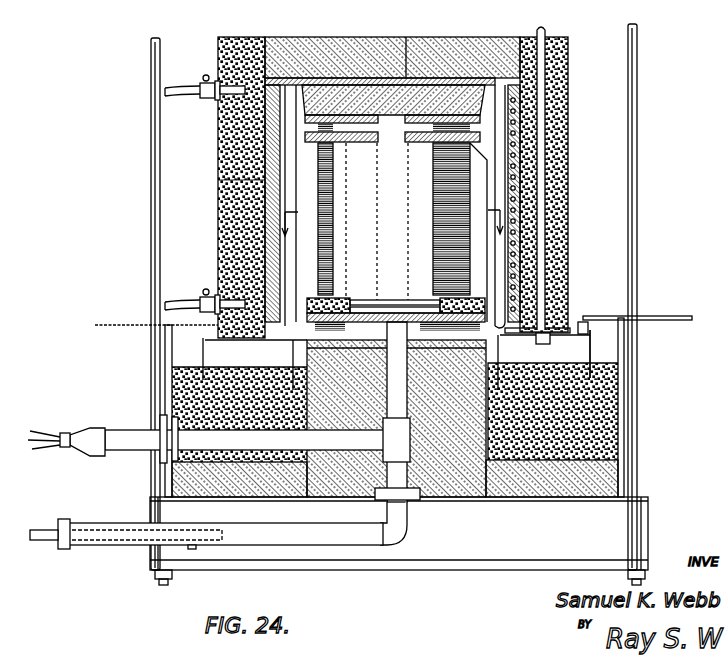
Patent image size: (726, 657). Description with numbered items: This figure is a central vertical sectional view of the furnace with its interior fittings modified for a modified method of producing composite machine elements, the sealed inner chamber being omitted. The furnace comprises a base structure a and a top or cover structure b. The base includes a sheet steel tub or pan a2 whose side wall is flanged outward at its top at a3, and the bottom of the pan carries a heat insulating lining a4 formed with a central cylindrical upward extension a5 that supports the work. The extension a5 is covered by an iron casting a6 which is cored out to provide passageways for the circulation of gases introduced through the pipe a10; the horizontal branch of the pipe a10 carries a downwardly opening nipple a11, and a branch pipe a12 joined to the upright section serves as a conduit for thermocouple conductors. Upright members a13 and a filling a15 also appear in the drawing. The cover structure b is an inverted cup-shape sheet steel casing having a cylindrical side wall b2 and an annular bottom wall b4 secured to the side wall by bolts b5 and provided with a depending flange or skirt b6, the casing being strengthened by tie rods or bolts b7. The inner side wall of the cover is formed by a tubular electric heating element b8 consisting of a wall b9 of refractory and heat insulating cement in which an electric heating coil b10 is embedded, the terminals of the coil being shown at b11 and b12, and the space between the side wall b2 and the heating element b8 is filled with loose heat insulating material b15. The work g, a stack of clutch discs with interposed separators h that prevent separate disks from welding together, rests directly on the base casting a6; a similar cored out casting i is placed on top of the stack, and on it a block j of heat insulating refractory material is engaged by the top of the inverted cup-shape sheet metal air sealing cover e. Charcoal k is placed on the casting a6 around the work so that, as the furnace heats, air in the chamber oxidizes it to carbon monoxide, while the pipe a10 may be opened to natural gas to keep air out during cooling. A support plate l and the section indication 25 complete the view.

The base structure a is at (655, 420).
The sheet steel tub or pan a2 is at (625, 392).
The outward flange a3 is at (688, 316).
The heat insulating lining a4 is at (565, 497).
The central cylindrical upward extension a5 is at (470, 490).
The iron casting a6 is at (305, 347).
The pipe a10 is at (440, 497).
The downwardly opening nipple a11 is at (193, 549).
The branch pipe a12 is at (127, 437).
The post a13 is at (151, 165).
The insulating filling a15 is at (624, 440).
The top or cover structure b is at (338, 75).
The cylindrical side wall b2 is at (568, 118).
The annular bottom wall b4 is at (575, 322).
The bolts b5 is at (588, 322).
The depending flange or skirt b6 is at (592, 348).
The tie rods or bolts b7 is at (545, 192).
The tubular electric heating element b8 is at (513, 152).
The wall of refractory and heat insulating cement b9 is at (520, 212).
The electric heating coil b10 is at (530, 246).
The coil terminal b11 is at (186, 85).
The coil terminal b12 is at (188, 298).
The loose heat insulating material b15 is at (555, 80).
The inverted cup-shape cover e is at (290, 180).
The work g is at (402, 232).
The separators h is at (418, 300).
The cored out casting i is at (360, 142).
The block of heat insulating refractory material j is at (406, 37).
The charcoal k is at (316, 298).
The support plate l is at (365, 300).
The section line 25 is at (392, 223).